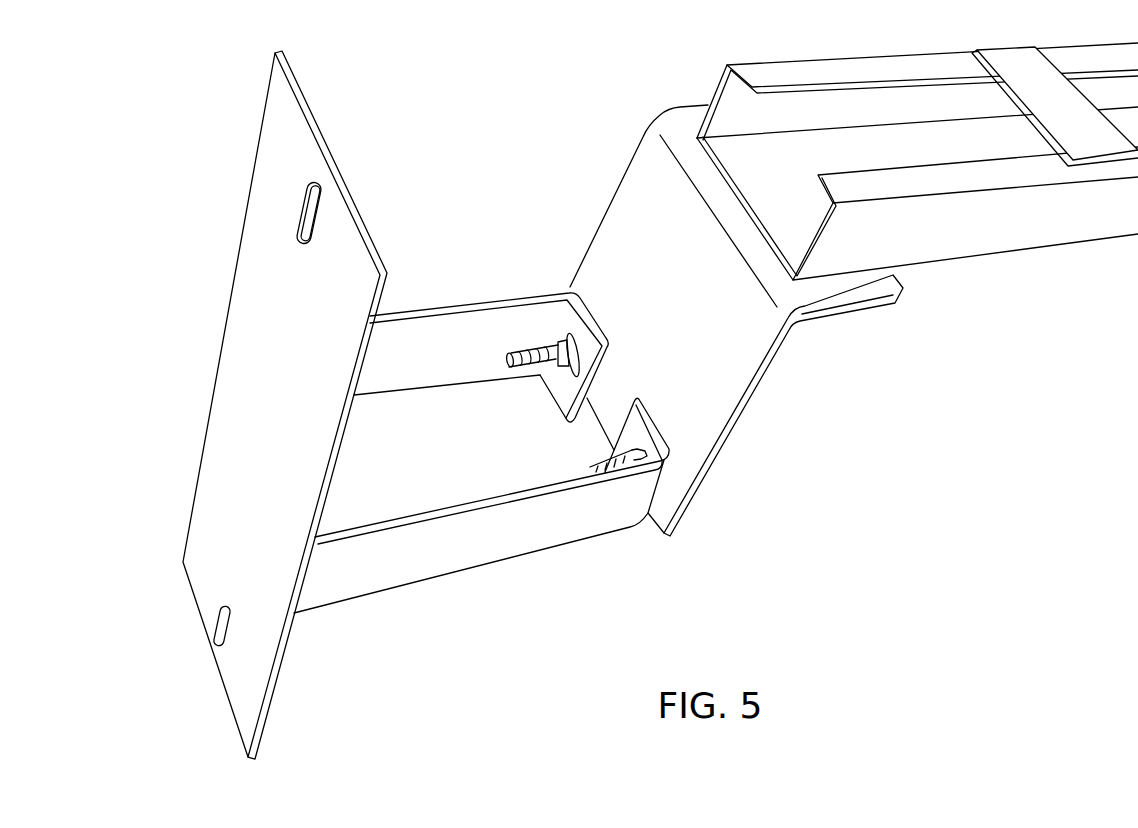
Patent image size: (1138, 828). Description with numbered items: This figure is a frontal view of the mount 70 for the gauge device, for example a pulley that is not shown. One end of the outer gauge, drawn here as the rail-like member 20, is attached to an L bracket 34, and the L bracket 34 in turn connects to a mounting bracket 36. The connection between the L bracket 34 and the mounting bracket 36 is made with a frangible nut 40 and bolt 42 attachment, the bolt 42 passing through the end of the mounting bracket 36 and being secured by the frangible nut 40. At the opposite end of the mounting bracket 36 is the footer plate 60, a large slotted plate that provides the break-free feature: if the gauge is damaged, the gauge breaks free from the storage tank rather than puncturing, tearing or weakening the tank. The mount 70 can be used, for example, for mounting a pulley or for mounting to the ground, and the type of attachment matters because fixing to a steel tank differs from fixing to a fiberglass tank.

The rail 20 is at (917, 161).
The L bracket 34 is at (727, 388).
The mounting bracket 36 is at (458, 333).
The frangible nut 40 is at (562, 345).
The bolt 42 is at (527, 373).
The footer plate 60 is at (253, 238).
The mount 70 is at (412, 405).